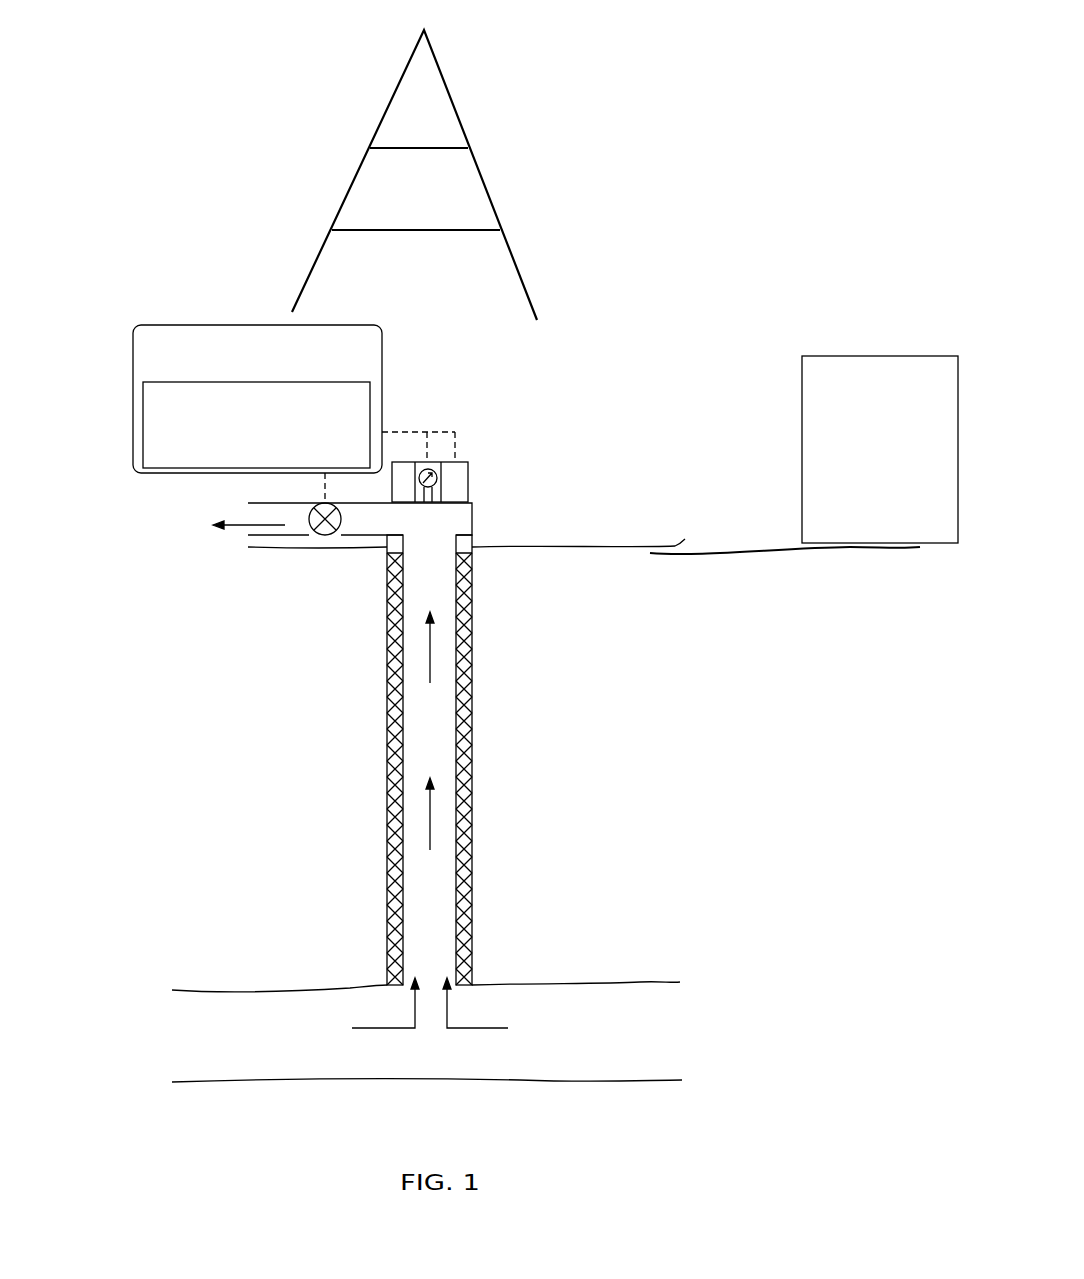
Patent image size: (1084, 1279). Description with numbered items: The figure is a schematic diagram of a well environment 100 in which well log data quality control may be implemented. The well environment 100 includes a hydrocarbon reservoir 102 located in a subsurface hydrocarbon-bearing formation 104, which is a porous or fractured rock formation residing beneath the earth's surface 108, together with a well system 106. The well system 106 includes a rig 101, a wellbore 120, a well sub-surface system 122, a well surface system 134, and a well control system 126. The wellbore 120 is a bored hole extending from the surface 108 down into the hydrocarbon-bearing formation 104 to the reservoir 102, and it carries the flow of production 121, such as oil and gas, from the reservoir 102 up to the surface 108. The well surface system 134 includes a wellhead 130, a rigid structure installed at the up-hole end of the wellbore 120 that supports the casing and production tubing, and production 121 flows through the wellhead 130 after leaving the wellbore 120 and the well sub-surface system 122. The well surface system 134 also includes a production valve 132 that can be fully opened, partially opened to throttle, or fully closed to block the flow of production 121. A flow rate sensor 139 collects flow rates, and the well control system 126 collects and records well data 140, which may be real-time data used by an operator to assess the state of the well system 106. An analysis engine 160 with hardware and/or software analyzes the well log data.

The well environment 100 is at (560, 201).
The rig 101 is at (481, 98).
The hydrocarbon reservoir 102 is at (427, 1030).
The hydrocarbon-bearing formation 104 is at (610, 851).
The well system 106 is at (229, 294).
The surface 108 is at (561, 560).
The wellbore 120 is at (478, 698).
The production 121 is at (184, 514).
The well sub-surface system 122 is at (373, 792).
The well control system 126 is at (175, 378).
The wellhead 130 is at (482, 524).
The production valve 132 is at (323, 536).
The well surface system 134 is at (478, 472).
The flow rate sensor 139 is at (403, 462).
The well data 140 is at (270, 451).
The analysis engine 160 is at (897, 490).